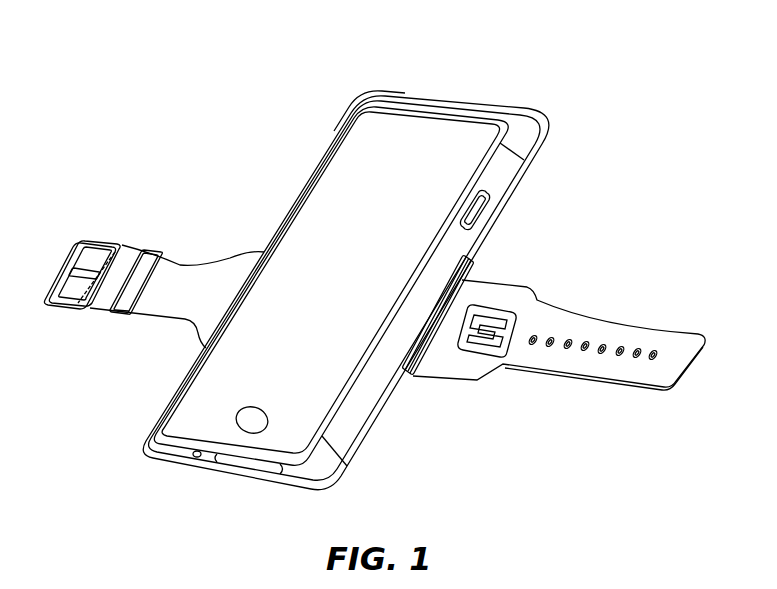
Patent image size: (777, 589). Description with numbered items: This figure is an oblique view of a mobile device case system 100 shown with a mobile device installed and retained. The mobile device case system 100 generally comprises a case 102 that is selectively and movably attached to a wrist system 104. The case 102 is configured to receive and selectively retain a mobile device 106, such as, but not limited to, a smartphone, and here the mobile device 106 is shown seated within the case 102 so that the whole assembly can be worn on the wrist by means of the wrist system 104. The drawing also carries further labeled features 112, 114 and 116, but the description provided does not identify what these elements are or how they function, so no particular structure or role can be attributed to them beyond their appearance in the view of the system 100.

The mobile device case system 100 is at (560, 87).
The case 102 is at (531, 141).
The wrist system 104 is at (527, 283).
The mobile device 106 is at (478, 197).
The mobile device 112 is at (353, 420).
The strap holes 114 is at (609, 330).
The second strap with buckle 116 is at (170, 277).